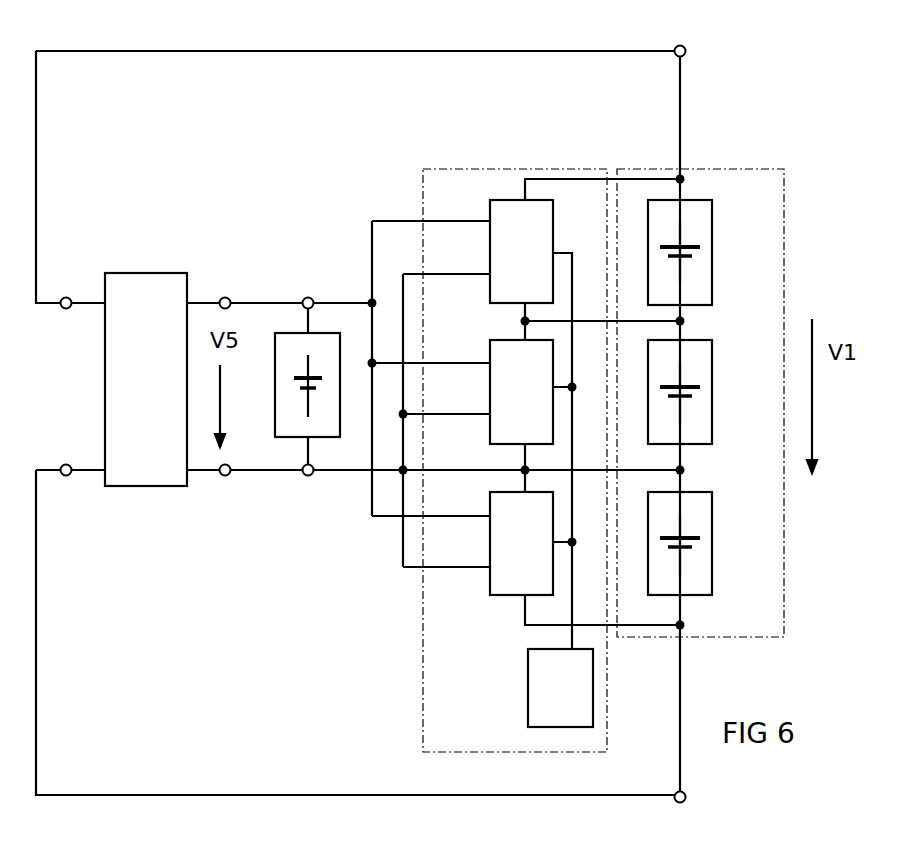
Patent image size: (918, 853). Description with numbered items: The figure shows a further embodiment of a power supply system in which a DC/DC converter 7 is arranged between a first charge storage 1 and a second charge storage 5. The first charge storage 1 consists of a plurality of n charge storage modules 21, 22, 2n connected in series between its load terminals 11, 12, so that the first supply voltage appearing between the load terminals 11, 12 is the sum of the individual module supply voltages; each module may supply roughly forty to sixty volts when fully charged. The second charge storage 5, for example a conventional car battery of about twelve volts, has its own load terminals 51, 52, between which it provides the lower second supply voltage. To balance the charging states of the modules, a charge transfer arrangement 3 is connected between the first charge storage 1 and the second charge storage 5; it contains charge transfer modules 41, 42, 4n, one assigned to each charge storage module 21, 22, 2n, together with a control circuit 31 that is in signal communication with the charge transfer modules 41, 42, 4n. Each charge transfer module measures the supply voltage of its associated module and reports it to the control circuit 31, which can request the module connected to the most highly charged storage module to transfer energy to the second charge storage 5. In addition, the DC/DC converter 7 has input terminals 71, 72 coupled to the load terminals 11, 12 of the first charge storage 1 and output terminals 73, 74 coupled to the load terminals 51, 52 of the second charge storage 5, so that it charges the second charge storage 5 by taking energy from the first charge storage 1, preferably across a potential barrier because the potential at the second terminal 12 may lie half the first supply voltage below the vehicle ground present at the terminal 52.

The first charge storage 1 is at (650, 167).
The load terminal 11 is at (682, 44).
The load terminal 12 is at (681, 803).
The charge storage module 21 is at (712, 247).
The charge storage module 22 is at (712, 387).
The charge storage module 2n is at (712, 537).
The charge transfer arrangement 3 is at (502, 167).
The control circuit 31 is at (528, 688).
The charge transfer module 41 is at (490, 258).
The charge transfer module 42 is at (490, 401).
The charge transfer module 4n is at (490, 553).
The second charge storage 5 is at (274, 379).
The load terminal 51 is at (307, 296).
The load terminal 52 is at (307, 477).
The DC/DC converter 7 is at (148, 271).
The input terminal 71 is at (66, 296).
The input terminal 72 is at (65, 477).
The output terminal 73 is at (226, 296).
The output terminal 74 is at (224, 477).